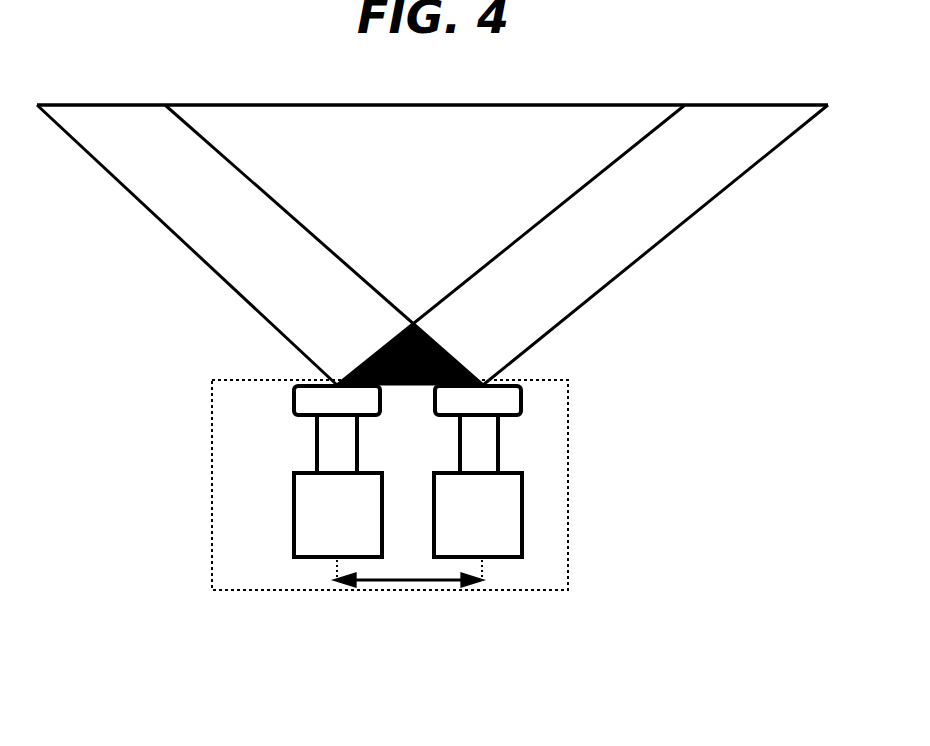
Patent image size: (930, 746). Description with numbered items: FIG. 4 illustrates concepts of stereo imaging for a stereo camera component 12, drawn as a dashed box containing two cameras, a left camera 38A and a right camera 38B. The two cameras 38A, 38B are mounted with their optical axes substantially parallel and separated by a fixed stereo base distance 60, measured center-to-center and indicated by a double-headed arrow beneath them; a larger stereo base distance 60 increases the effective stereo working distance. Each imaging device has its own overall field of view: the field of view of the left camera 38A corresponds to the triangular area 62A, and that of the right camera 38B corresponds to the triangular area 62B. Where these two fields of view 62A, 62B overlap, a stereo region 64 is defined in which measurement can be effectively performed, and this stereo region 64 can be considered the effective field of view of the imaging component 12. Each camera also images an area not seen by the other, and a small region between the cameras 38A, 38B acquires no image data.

The stereo camera component 12 is at (212, 447).
The left camera 38A is at (311, 528).
The right camera 38B is at (455, 528).
The stereo base distance 60 is at (411, 584).
The field of view of the left imaging device 62A is at (117, 183).
The field of view of the right imaging device 62B is at (750, 168).
The stereo region 64 is at (449, 216).